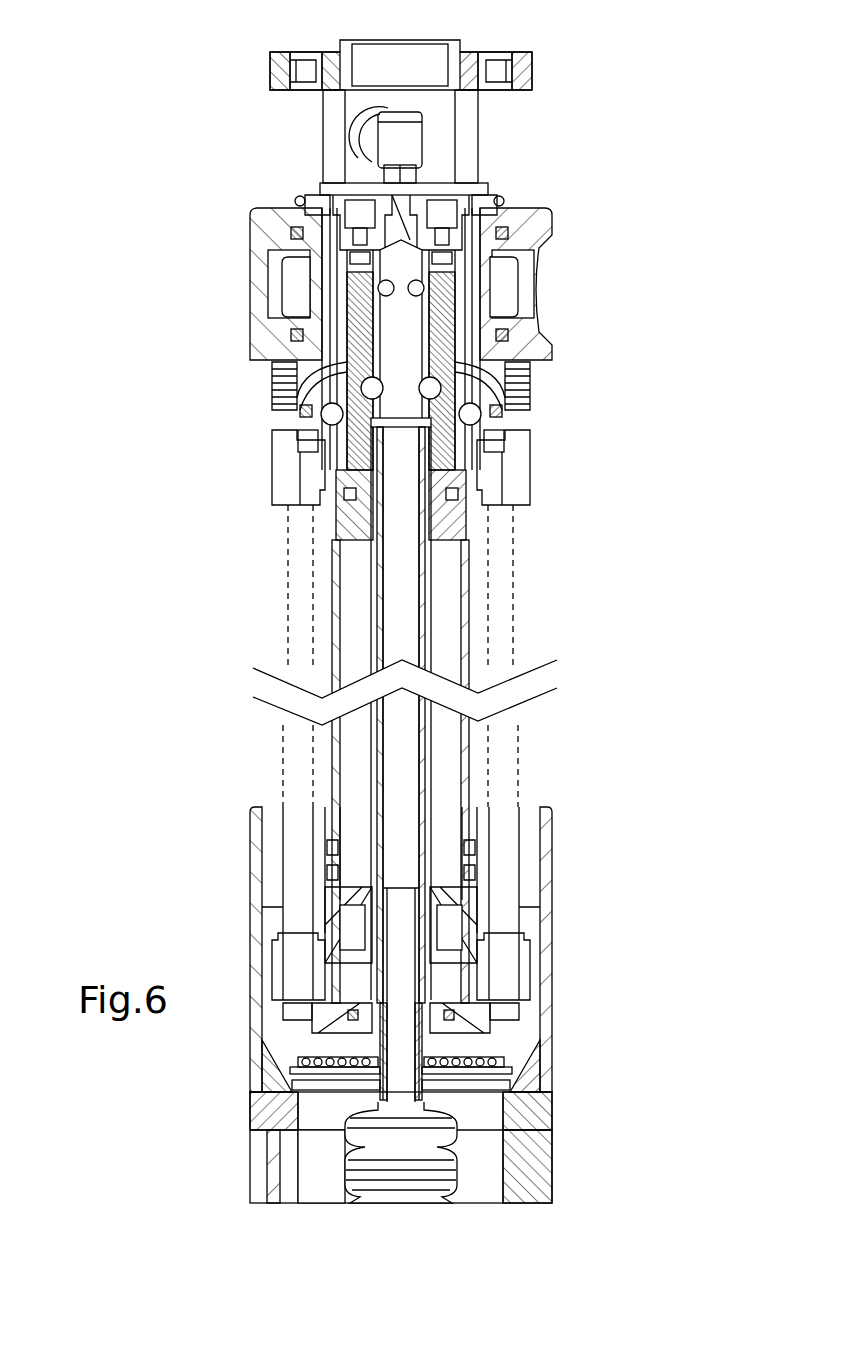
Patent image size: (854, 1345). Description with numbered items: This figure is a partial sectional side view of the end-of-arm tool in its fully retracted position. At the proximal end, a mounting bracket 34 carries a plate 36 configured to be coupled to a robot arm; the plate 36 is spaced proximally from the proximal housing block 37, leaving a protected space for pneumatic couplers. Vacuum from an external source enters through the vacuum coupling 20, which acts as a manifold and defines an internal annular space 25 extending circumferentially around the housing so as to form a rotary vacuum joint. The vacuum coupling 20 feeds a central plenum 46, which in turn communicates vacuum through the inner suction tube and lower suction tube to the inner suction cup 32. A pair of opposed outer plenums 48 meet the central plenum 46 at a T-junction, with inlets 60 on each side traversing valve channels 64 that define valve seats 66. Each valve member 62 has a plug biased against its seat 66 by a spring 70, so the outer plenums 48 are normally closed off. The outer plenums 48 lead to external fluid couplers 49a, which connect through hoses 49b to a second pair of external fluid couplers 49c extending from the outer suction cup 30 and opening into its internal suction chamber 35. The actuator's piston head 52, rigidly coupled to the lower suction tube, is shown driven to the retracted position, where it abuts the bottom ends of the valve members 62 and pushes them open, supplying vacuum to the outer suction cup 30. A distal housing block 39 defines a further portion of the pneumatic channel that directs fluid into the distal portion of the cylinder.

The plate 36 is at (525, 40).
The mounting bracket 34 is at (523, 129).
The proximal housing block 37 is at (305, 183).
The spring 70 is at (503, 203).
The vacuum coupling 20 is at (265, 240).
The internal annular space 25 is at (296, 285).
The valve member 62 is at (345, 322).
The central plenum 46 is at (400, 350).
The outer plenum 48 is at (290, 388).
The valve channel 64 is at (300, 408).
The inlet 60 is at (334, 417).
The valve seat 66 is at (298, 445).
The external fluid coupler 49a is at (285, 472).
The piston head 52 is at (340, 535).
The hose 49b is at (282, 760).
The distal housing block 39 is at (480, 920).
The external fluid coupler 49c is at (278, 975).
The outer suction cup 30 is at (552, 1172).
The internal suction chamber 35 is at (320, 1168).
The inner suction cup 32 is at (447, 1175).